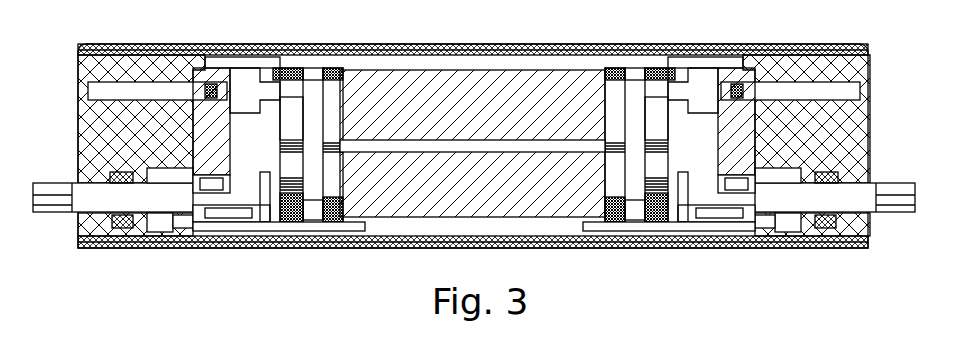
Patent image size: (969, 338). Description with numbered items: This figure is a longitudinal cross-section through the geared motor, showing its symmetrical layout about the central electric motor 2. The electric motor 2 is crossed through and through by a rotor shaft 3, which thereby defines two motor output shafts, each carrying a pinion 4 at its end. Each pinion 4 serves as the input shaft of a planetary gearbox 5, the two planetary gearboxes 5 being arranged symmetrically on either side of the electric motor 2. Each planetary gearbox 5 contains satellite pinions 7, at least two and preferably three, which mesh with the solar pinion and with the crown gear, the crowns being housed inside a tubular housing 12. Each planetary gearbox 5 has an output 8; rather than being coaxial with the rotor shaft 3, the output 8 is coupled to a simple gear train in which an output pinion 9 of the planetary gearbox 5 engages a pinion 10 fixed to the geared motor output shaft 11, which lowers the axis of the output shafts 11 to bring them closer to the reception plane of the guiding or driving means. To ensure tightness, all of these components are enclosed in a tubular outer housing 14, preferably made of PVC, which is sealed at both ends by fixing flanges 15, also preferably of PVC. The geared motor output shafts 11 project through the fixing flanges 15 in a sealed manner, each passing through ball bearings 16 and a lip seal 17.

The electric motor 2 is at (543, 198).
The rotor shaft 3 is at (475, 143).
The pinion 4 is at (332, 77).
The planetary gearbox 5 is at (290, 66).
The satellite pinion 7 is at (288, 222).
The output 8 is at (270, 208).
The output pinion 9 is at (248, 165).
The pinion 10 is at (242, 212).
The geared motor output shaft 11 is at (72, 207).
The tubular housing 12 is at (362, 226).
The tubular outer housing 14 is at (538, 50).
The fixing flange 15 is at (102, 232).
The ball bearing 16 is at (138, 217).
The lip seal 17 is at (113, 222).